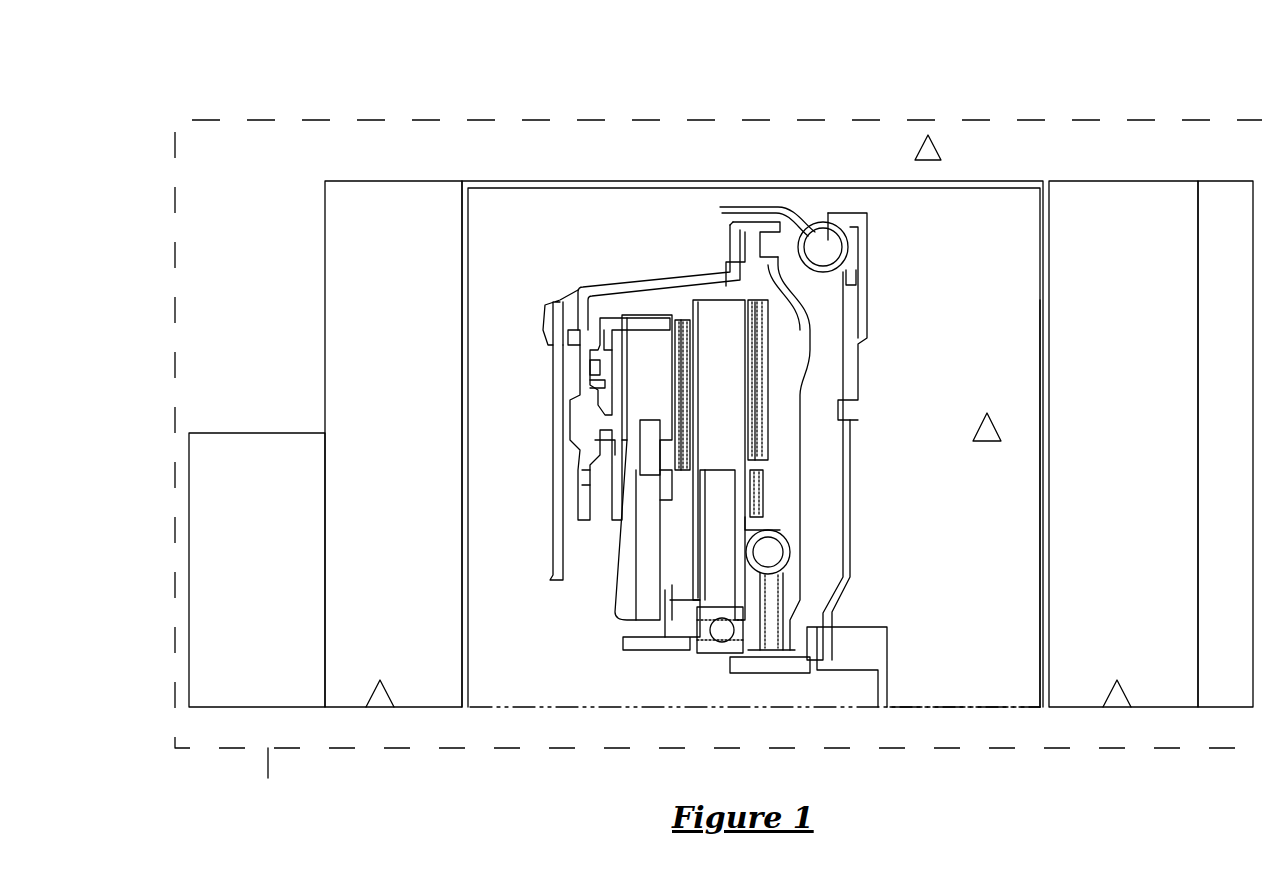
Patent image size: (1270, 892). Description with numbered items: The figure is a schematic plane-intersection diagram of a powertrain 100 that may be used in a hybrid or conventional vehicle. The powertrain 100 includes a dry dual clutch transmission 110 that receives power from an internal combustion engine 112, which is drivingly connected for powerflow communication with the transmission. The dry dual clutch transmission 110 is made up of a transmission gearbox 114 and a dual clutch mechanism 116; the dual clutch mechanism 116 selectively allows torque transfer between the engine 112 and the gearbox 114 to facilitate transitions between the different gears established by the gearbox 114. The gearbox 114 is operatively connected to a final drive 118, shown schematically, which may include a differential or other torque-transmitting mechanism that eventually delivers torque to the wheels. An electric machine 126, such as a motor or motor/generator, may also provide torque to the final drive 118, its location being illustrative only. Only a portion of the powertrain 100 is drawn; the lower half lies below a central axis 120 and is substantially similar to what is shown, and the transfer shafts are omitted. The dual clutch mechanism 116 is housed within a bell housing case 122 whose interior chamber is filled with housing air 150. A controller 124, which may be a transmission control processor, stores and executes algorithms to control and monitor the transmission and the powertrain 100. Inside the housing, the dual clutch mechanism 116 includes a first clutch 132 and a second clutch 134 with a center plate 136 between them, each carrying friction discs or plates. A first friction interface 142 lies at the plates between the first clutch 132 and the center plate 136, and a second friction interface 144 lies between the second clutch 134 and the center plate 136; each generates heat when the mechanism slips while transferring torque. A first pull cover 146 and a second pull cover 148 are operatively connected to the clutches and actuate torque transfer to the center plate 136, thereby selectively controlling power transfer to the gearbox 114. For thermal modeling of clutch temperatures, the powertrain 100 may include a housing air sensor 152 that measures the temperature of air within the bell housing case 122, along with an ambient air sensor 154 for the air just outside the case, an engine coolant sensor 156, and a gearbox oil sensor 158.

The powertrain 100 is at (240, 110).
The dry dual clutch transmission 110 is at (750, 153).
The internal combustion engine 112 is at (1123, 444).
The transmission gearbox 114 is at (393, 444).
The dual clutch mechanism 116 is at (663, 688).
The final drive 118 is at (257, 570).
The central axis 120 is at (932, 707).
The bell housing case 122 is at (1043, 550).
The controller 124 is at (262, 800).
The electric machine 126 is at (1225, 444).
The first clutch 132 is at (794, 387).
The second clutch 134 is at (651, 348).
The center plate 136 is at (717, 509).
The first friction interface 142 is at (755, 385).
The second friction interface 144 is at (684, 373).
The first pull cover 146 is at (602, 286).
The second pull cover 148 is at (593, 429).
The housing air 150 is at (995, 345).
The housing air sensor 152 is at (987, 441).
The ambient air sensor 154 is at (940, 150).
The engine coolant sensor 156 is at (1117, 707).
The gearbox oil sensor 158 is at (380, 707).